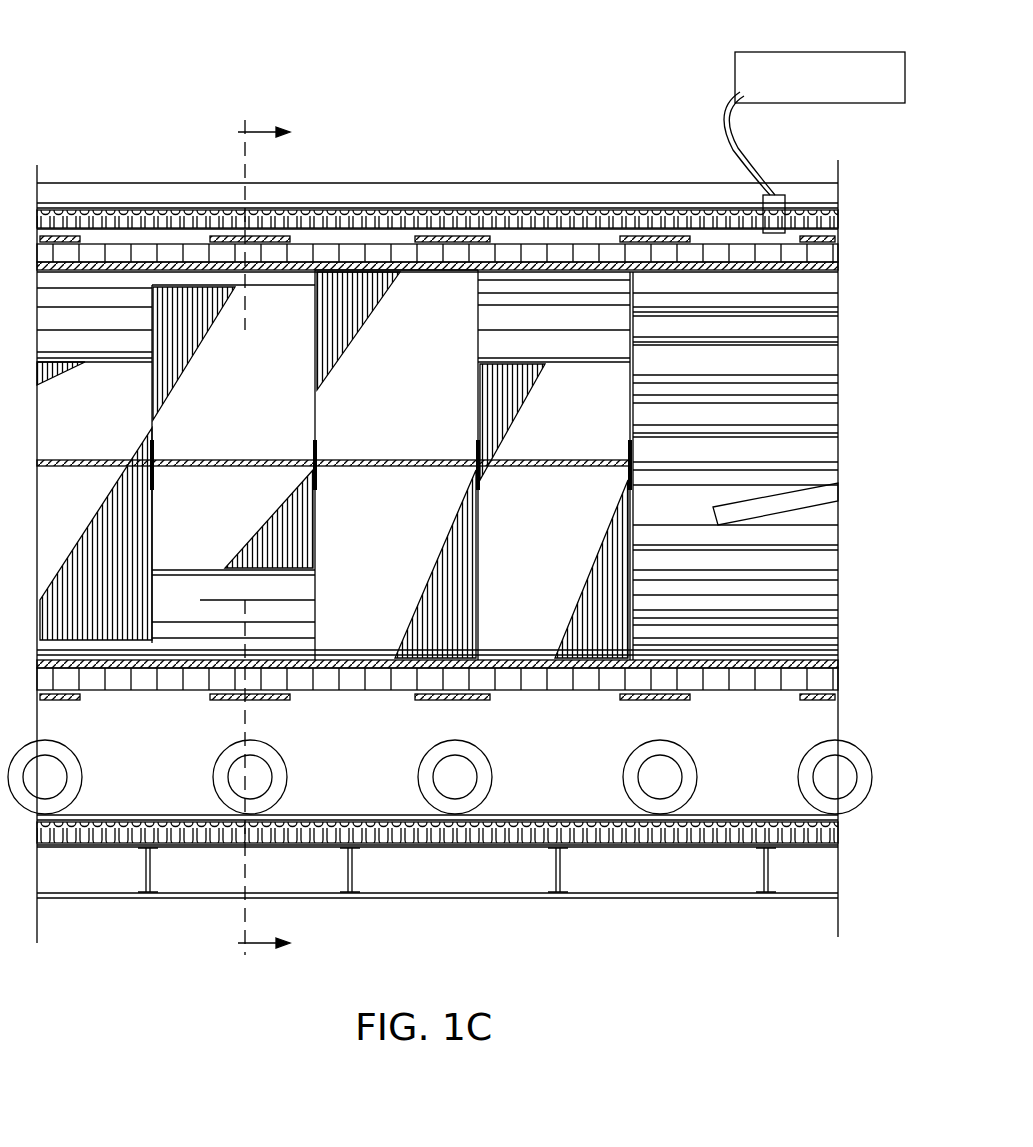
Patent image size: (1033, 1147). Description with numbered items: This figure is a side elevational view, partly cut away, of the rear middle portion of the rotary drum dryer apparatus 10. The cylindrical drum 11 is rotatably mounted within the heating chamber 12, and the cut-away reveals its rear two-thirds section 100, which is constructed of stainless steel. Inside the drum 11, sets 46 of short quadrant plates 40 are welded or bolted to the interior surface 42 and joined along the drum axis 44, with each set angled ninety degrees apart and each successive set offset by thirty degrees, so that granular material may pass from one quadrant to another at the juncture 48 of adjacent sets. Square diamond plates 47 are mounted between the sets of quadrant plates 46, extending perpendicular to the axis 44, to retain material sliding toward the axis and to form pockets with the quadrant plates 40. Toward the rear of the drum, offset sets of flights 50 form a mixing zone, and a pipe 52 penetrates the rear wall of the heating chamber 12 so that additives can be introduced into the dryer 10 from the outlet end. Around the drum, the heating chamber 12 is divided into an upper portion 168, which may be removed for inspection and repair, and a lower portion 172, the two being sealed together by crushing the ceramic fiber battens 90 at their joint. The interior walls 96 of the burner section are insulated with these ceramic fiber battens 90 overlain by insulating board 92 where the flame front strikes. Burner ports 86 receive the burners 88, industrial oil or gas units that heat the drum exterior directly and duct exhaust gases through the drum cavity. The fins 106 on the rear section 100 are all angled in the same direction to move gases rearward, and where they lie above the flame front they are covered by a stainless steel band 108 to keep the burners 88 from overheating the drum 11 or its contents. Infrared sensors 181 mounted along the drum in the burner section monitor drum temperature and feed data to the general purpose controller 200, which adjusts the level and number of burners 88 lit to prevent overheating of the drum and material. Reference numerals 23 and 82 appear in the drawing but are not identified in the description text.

The rotary drum dryer apparatus 10 is at (490, 165).
The cylindrical drum 11 is at (582, 262).
The heating chamber 12 is at (395, 183).
The base frame 23 is at (515, 898).
The quadrant plates 40 is at (80, 421).
The interior surface 42 is at (405, 272).
The drum axis 44 is at (255, 460).
The sets of quadrant plates 46 is at (153, 458).
The square diamond plates 47 is at (150, 485).
The juncture 48 is at (152, 372).
The flights 50 is at (715, 370).
The pipe 52 is at (808, 500).
The lower chamber 82 is at (332, 800).
The burner ports 86 is at (78, 762).
The burners 88 is at (65, 796).
The ceramic fiber battens 90 is at (103, 215).
The insulating board 92 is at (405, 832).
The interior walls 96 is at (548, 815).
The rear two-thirds section 100 is at (362, 672).
The fins 106 is at (140, 245).
The band 108 is at (222, 236).
The upper portion 168 is at (62, 205).
The lower portion 172 is at (122, 815).
The infrared sensors 181 is at (790, 195).
The general purpose controller 200 is at (775, 52).